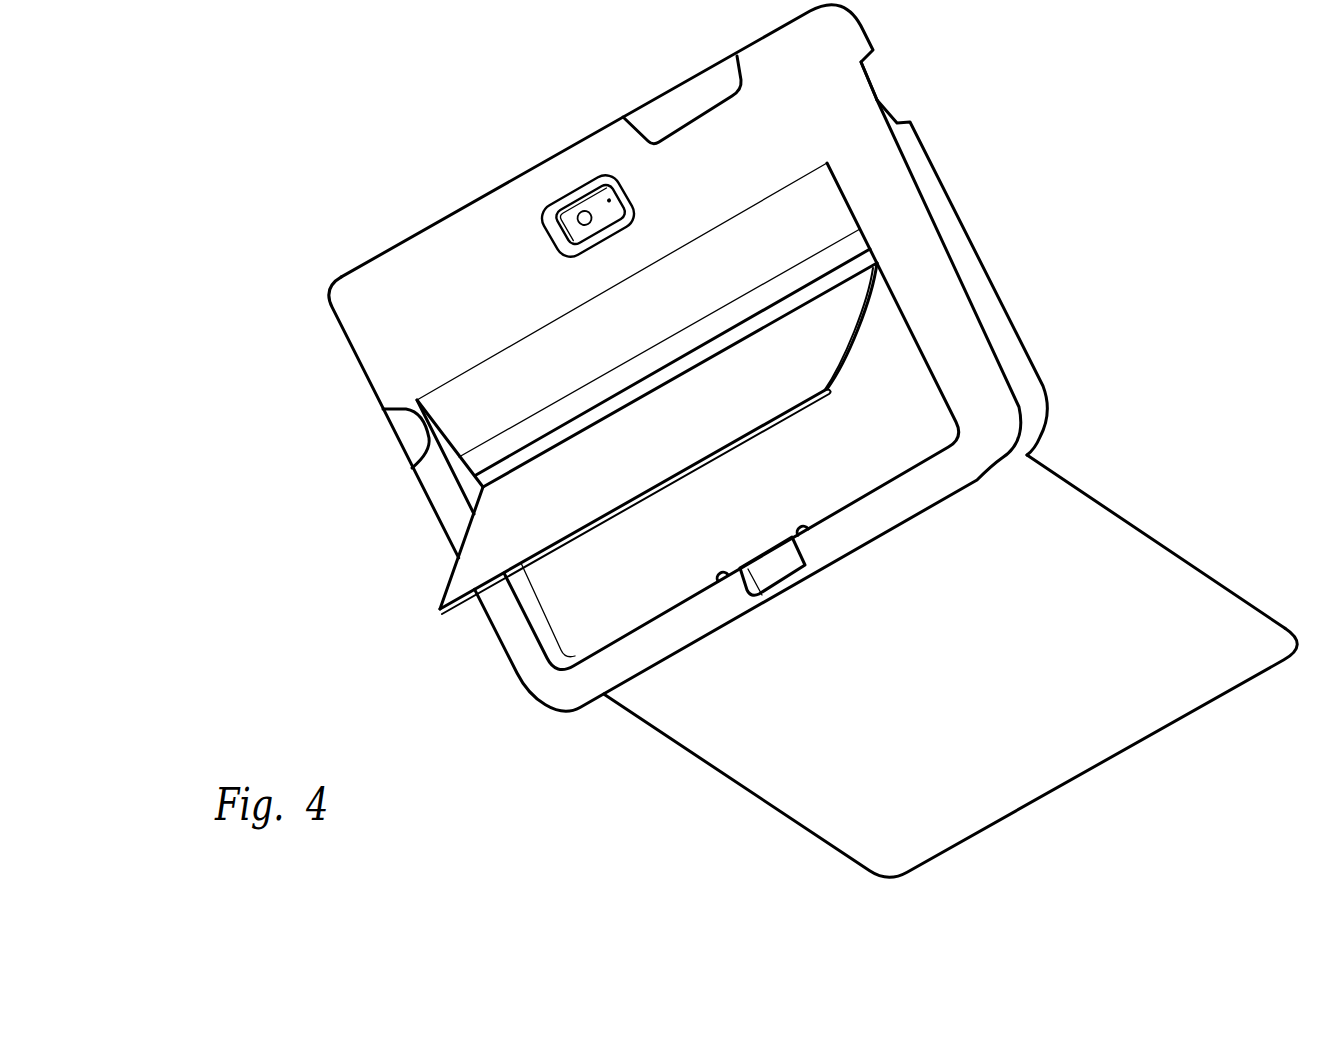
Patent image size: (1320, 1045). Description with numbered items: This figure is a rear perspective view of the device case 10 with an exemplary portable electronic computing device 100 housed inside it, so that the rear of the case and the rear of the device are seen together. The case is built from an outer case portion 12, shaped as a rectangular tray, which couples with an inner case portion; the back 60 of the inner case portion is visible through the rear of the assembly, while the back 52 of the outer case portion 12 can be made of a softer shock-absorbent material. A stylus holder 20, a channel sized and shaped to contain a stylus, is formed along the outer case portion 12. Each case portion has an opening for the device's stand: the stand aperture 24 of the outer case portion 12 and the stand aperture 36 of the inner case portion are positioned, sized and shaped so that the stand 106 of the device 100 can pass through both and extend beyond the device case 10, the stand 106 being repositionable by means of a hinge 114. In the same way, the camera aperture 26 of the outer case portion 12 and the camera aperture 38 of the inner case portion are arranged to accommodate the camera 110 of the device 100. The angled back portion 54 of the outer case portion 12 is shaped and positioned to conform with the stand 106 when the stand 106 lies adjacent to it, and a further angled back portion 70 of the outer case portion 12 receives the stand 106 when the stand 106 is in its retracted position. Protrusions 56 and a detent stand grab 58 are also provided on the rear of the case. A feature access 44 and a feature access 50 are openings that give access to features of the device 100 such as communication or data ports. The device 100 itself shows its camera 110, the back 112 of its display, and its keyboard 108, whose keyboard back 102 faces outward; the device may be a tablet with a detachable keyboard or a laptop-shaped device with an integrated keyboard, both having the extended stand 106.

The device case 10 is at (255, 88).
The outer case portion 12 is at (465, 148).
The stylus holder 20 is at (883, 100).
The stand aperture 24 is at (722, 305).
The camera aperture 26 is at (545, 228).
The stand aperture 36 is at (620, 392).
The camera aperture 38 is at (588, 216).
The feature access 44 is at (408, 442).
The feature access 50 is at (667, 110).
The back of outer case portion 52 is at (817, 56).
The angled back portion of outer case portion 54 is at (463, 393).
The protrusions 56 is at (722, 575).
The detent stand grab 58 is at (777, 577).
The back of inner case portion 60 is at (850, 247).
The angled back portion of outer case portion 70 is at (907, 407).
The exemplary device 100 is at (1108, 445).
The keyboard back 102 is at (1143, 708).
The stand 106 is at (446, 590).
The keyboard 108 is at (1212, 515).
The camera 110 is at (615, 192).
The back of display 112 is at (887, 320).
The hinge 114 is at (533, 450).